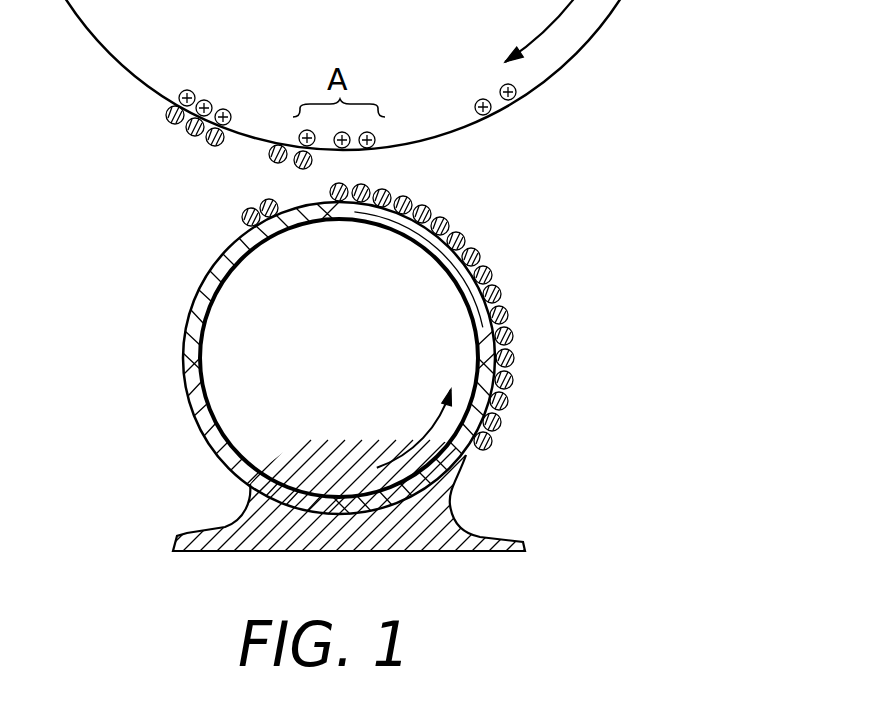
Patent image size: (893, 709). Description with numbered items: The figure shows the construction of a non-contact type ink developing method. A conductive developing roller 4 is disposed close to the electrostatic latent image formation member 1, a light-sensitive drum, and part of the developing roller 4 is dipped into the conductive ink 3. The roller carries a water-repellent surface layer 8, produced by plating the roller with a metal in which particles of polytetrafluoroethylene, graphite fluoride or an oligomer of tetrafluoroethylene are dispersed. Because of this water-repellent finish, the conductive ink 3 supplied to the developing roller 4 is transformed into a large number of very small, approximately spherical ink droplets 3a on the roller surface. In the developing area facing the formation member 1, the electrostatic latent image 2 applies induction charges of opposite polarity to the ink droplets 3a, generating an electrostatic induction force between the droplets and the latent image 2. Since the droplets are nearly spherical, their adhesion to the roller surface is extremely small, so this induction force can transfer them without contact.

The electrostatic latent image formation member 1 is at (560, 67).
The electrostatic latent image 2 is at (505, 84).
The conductive ink 3 is at (463, 527).
The ink droplets 3a is at (165, 118).
The conductive developing roller 4 is at (186, 312).
The water-repellent surface layer 8 is at (186, 402).